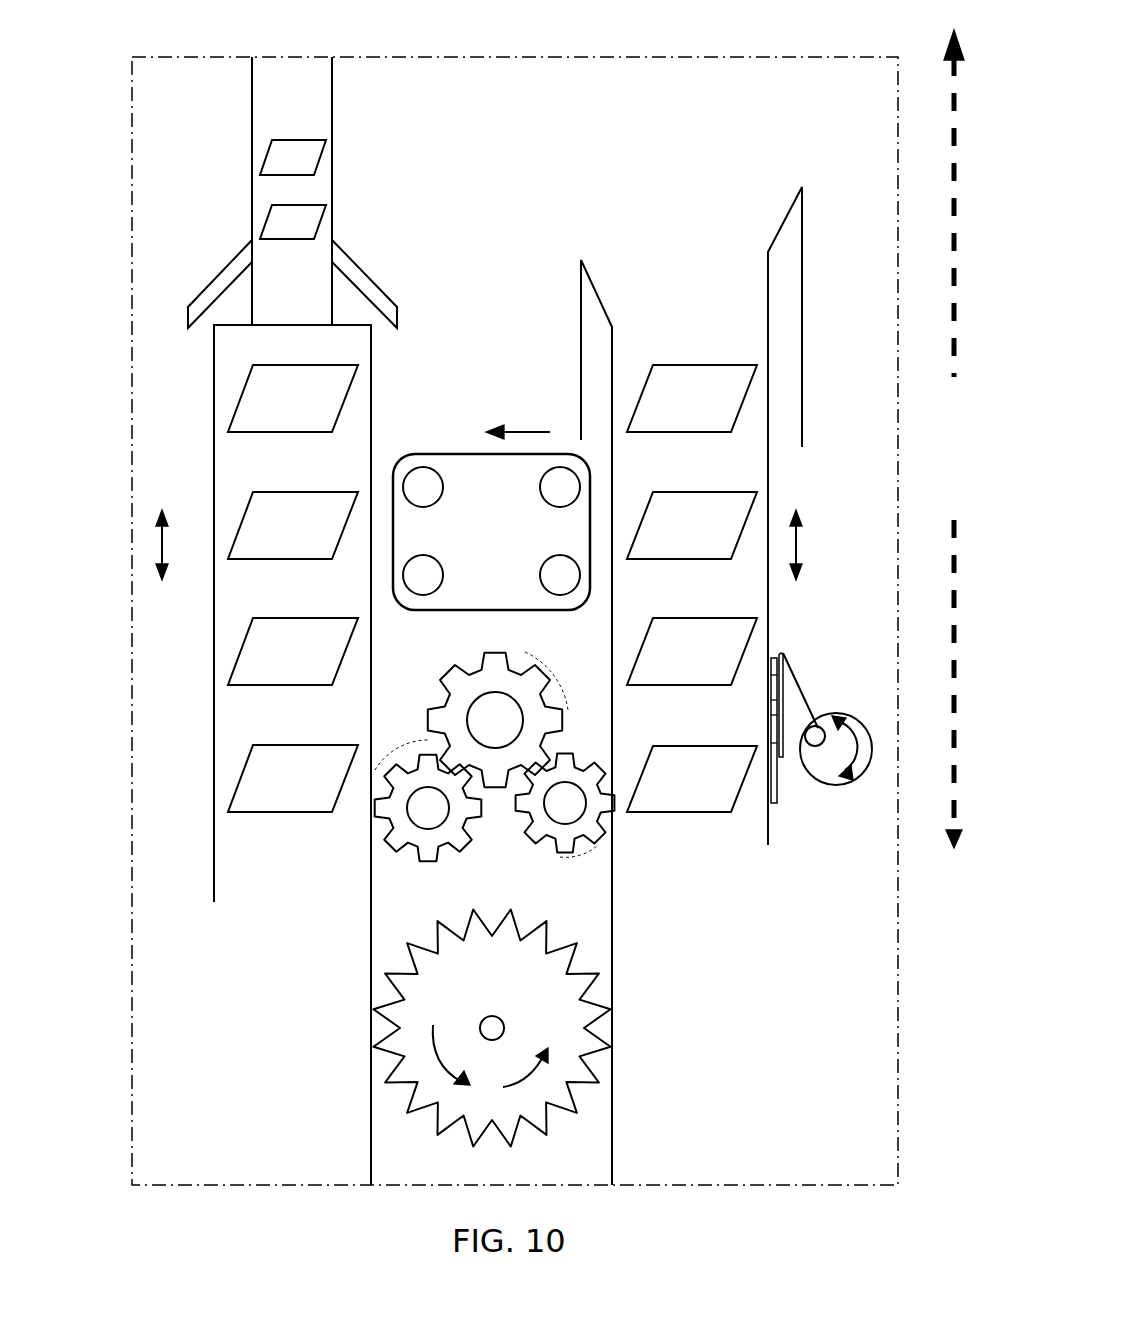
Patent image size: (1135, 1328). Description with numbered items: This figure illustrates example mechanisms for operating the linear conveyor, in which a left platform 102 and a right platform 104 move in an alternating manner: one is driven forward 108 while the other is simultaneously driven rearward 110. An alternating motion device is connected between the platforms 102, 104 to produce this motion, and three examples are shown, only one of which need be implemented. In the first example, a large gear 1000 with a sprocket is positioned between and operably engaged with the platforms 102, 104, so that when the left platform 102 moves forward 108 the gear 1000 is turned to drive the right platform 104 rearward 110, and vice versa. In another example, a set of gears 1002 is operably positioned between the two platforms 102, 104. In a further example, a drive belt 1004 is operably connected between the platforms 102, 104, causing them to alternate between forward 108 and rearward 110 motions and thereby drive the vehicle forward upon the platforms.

The left platform 102 is at (220, 785).
The right platform 104 is at (772, 830).
The forward direction 108 is at (950, 60).
The rearward direction 110 is at (951, 794).
The large gear 1000 is at (415, 1072).
The set of gears 1002 is at (402, 815).
The drive belt 1004 is at (435, 460).